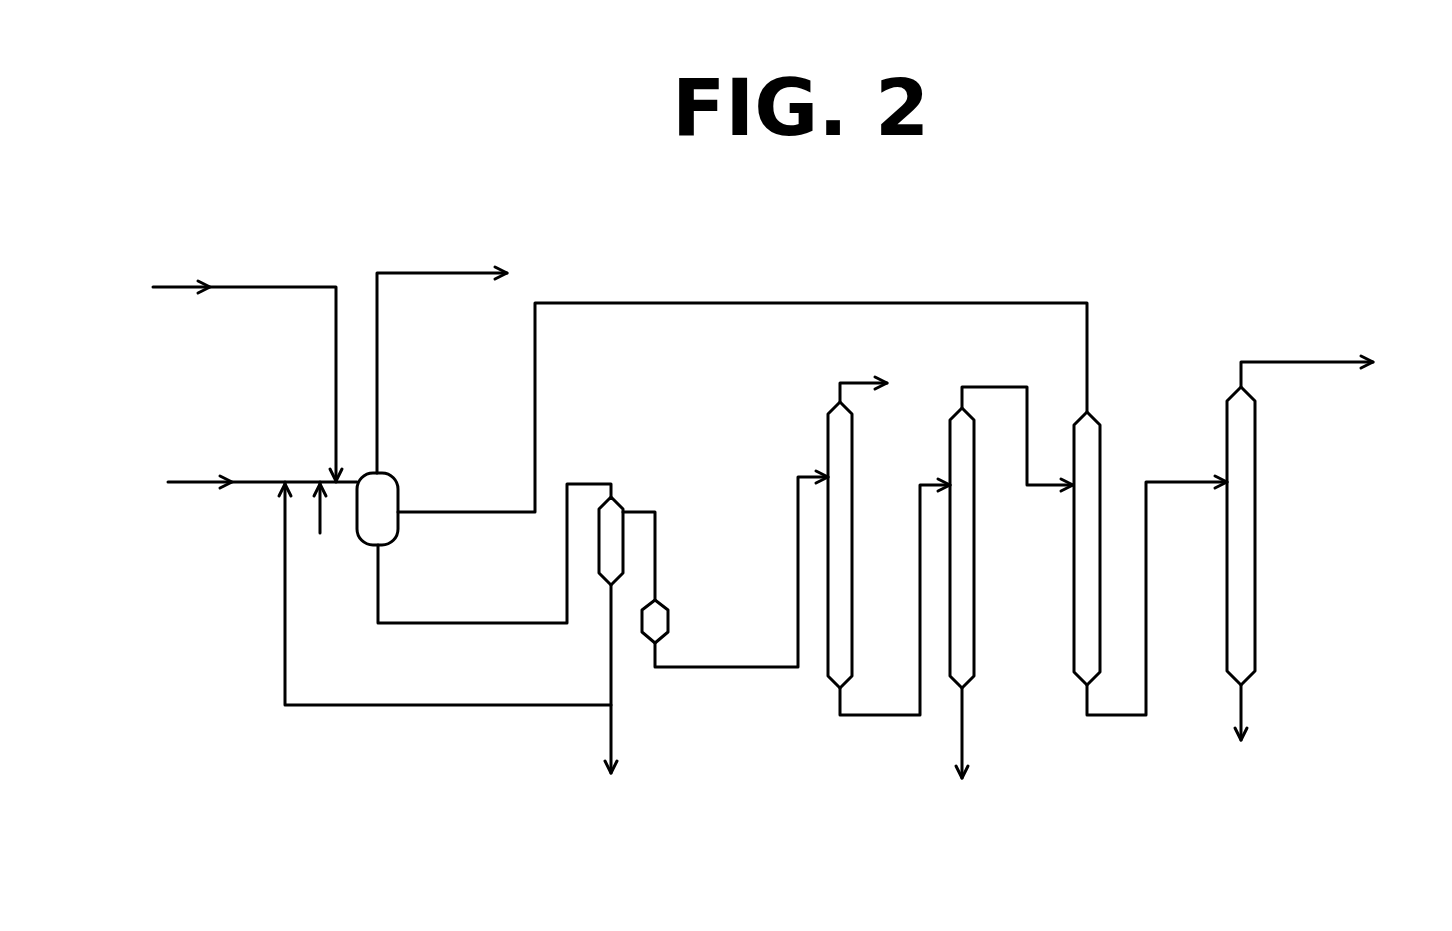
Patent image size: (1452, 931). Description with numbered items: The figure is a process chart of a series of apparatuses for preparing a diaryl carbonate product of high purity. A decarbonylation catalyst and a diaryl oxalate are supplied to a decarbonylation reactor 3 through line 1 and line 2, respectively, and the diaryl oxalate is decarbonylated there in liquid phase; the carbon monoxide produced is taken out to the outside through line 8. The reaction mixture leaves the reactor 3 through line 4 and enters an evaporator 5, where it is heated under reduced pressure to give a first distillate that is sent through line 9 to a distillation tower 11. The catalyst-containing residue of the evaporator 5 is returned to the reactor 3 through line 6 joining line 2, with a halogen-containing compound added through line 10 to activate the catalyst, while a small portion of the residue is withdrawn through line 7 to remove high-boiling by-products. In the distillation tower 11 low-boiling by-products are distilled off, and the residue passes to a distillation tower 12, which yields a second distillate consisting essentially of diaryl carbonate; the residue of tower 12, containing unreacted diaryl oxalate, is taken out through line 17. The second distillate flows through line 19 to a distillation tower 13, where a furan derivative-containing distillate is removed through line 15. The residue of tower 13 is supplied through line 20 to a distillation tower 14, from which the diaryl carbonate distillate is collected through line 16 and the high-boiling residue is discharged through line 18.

The line 1 is at (247, 363).
The line 2 is at (262, 464).
The decarbonylation reactor 3 is at (404, 509).
The line 4 is at (494, 576).
The evaporator 5 is at (625, 526).
The line 6 is at (445, 613).
The line 7 is at (612, 697).
The line 8 is at (443, 351).
The line 9 is at (725, 591).
The line 10 is at (322, 530).
The distillation tower 11 is at (863, 544).
The distillation tower 12 is at (935, 532).
The distillation tower 13 is at (1112, 532).
The distillation tower 14 is at (1272, 536).
The line 15 is at (748, 384).
The line 16 is at (1338, 370).
The line 17 is at (967, 753).
The line 18 is at (1246, 735).
The line 19 is at (1017, 460).
The line 20 is at (1157, 595).